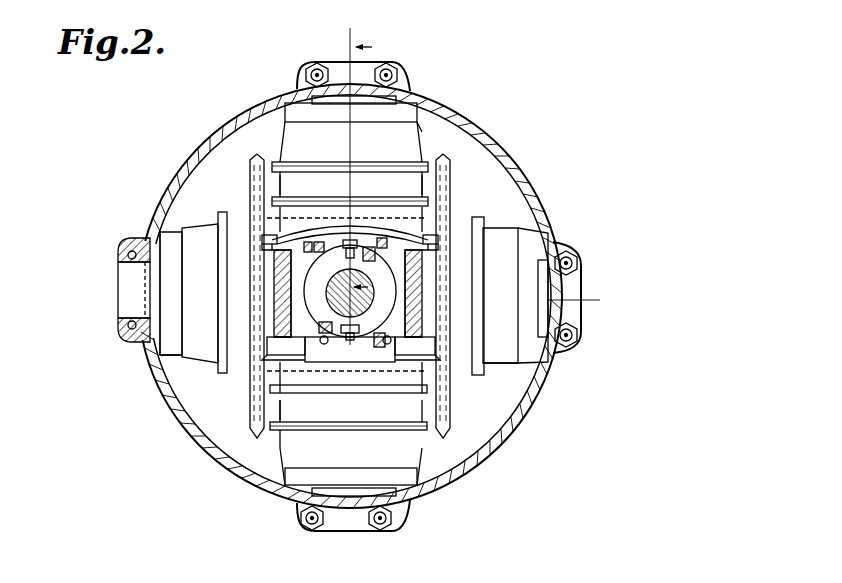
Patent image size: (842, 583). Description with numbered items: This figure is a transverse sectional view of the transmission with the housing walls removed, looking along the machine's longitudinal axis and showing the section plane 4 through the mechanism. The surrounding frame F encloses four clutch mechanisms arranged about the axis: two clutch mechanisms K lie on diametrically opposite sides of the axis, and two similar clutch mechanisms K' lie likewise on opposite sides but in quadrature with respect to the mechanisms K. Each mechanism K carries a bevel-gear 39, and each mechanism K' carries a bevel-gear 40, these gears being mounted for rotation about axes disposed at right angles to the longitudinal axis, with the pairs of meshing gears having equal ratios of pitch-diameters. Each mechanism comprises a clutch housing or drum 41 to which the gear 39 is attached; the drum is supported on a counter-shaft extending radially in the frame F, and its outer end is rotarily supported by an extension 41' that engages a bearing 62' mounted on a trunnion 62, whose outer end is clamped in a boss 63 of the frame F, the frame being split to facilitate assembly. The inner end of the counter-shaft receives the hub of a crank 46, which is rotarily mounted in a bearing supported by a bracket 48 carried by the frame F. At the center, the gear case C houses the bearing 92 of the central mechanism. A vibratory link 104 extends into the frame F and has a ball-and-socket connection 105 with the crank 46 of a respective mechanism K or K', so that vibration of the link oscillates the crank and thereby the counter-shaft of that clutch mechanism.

The frame F is at (192, 140).
The clutch mechanism K is at (346, 294).
The clutch mechanism K' is at (354, 293).
The central gear case C is at (420, 275).
The section line 4- 4 is at (351, 166).
The bevel-gear 39 is at (417, 223).
The bevel-gear 40 is at (251, 428).
The clutch housing or drum 41 is at (356, 312).
The extension 41' is at (348, 304).
The crank 46 is at (362, 242).
The bracket 48 is at (277, 315).
The trunnion 62 is at (111, 290).
The bearing 62' is at (350, 301).
The boss 63 is at (381, 64).
The bearing 92 is at (340, 262).
The vibratory link 104 is at (329, 240).
The ball-and-socket connection 105 is at (315, 241).